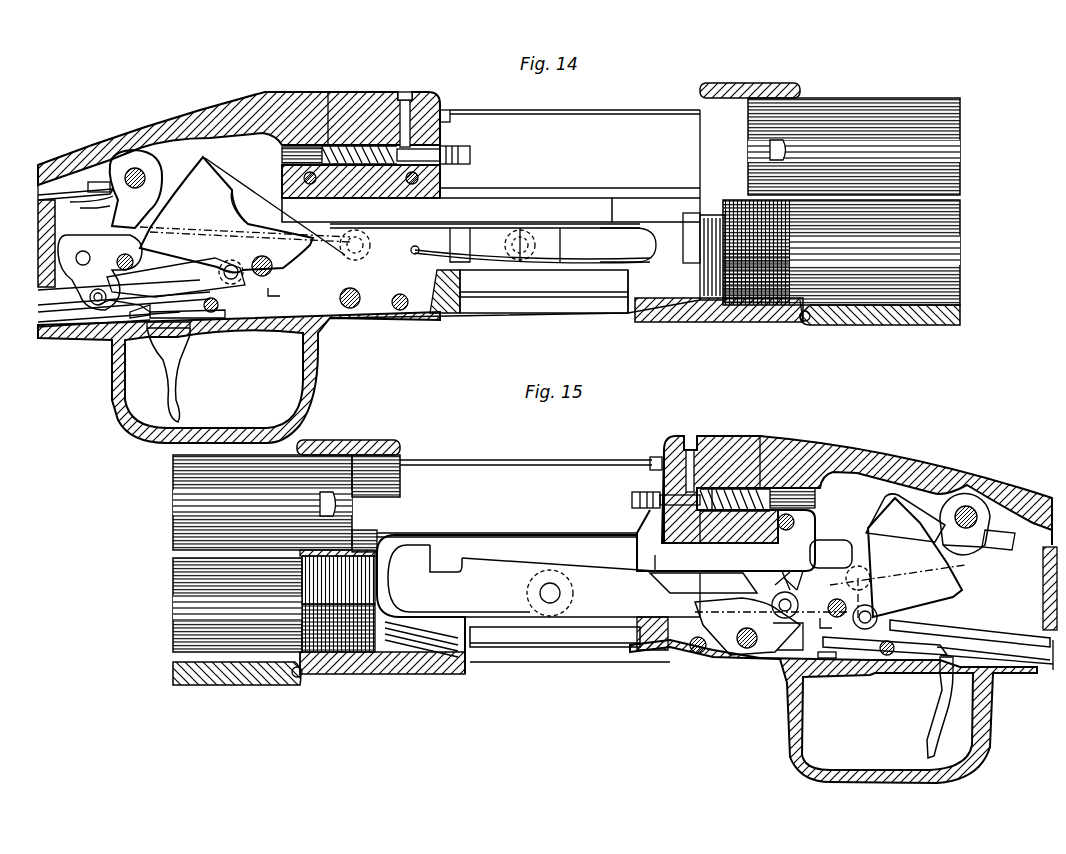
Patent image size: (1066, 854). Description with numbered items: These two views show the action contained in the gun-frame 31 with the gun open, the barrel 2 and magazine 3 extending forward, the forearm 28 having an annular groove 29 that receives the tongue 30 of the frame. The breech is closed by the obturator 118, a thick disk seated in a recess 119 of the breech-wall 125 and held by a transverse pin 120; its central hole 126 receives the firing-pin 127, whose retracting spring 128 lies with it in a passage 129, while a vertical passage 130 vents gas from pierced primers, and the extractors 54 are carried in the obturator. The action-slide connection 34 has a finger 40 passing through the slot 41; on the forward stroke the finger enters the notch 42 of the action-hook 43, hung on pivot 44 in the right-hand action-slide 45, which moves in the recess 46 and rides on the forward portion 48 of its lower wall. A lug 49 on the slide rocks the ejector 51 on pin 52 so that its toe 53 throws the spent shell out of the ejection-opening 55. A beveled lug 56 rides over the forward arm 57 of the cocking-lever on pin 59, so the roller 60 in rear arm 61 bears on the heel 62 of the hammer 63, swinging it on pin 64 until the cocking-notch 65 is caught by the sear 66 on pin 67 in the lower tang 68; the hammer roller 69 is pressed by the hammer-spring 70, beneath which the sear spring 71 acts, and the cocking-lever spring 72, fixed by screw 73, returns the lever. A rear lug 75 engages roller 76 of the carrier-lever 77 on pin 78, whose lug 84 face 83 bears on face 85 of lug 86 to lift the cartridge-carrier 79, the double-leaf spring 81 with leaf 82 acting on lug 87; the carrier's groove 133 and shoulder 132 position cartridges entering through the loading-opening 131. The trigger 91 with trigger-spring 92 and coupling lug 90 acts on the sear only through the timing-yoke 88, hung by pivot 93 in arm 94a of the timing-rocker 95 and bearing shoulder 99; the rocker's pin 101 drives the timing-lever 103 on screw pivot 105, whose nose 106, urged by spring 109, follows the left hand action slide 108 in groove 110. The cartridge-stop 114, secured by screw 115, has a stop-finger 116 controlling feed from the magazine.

In FIG. 14, the barrel 2 is at (832, 110).
In FIG. 15, the barrel 2 is at (286, 503).
In FIG. 14, the magazine 3 is at (841, 252).
In FIG. 15, the magazine 3 is at (190, 613).
In FIG. 14, the forearm 28 is at (848, 325).
In FIG. 15, the forearm 28 is at (237, 686).
In FIG. 14, the annular groove 29 is at (806, 322).
In FIG. 15, the annular groove 29 is at (295, 678).
In FIG. 14, the tongue 30 is at (800, 322).
In FIG. 15, the tongue 30 is at (303, 678).
In FIG. 14, the gun-frame 31 is at (752, 95).
In FIG. 15, the gun-frame 31 is at (358, 440).
In FIG. 15, the action-slide connection 34 is at (556, 560).
In FIG. 15, the finger 40 is at (450, 556).
In FIG. 15, the slot 41 is at (532, 545).
In FIG. 15, the notch 42 is at (430, 565).
In FIG. 15, the action-hook 43 is at (550, 600).
In FIG. 15, the pivot 44 is at (560, 589).
In FIG. 15, the right-hand action-slide 45 is at (655, 586).
In FIG. 15, the recess 46 is at (387, 548).
In FIG. 15, the forward portion of the lower wall of the recess 48 is at (445, 625).
In FIG. 15, the lug 49 is at (831, 554).
In FIG. 15, the ejector 51 is at (694, 633).
In FIG. 14, the pin 52 is at (300, 178).
In FIG. 15, the pin 52 is at (796, 521).
In FIG. 15, the toe 53 is at (648, 523).
In FIG. 14, the extractors 54 is at (470, 155).
In FIG. 15, the extractors 54 is at (632, 501).
In FIG. 14, the ejection-opening 55 is at (570, 137).
In FIG. 15, the ejection-opening 55 is at (526, 450).
In FIG. 15, the lug 56 is at (703, 583).
In FIG. 15, the forward arm 57 is at (696, 604).
In FIG. 14, the pin 59 is at (340, 299).
In FIG. 15, the pin 59 is at (746, 648).
In FIG. 15, the antifriction roller 60 is at (772, 605).
In FIG. 15, the rear arm 61 is at (716, 634).
In FIG. 14, the heel 62 is at (300, 240).
In FIG. 15, the heel 62 is at (795, 571).
In FIG. 14, the hammer 63 is at (226, 214).
In FIG. 15, the hammer 63 is at (915, 557).
In FIG. 14, the pin 64 is at (264, 256).
In FIG. 15, the pin 64 is at (833, 600).
In FIG. 14, the cocking-notch 65 is at (282, 292).
In FIG. 15, the cocking-notch 65 is at (821, 625).
In FIG. 14, the sear 66 is at (197, 304).
In FIG. 15, the sear 66 is at (908, 636).
In FIG. 14, the pin 67 is at (214, 312).
In FIG. 15, the pin 67 is at (885, 656).
In FIG. 14, the lower tang 68 is at (116, 386).
In FIG. 15, the lower tang 68 is at (792, 715).
In FIG. 14, the antifriction roller 69 is at (230, 262).
In FIG. 15, the antifriction roller 69 is at (880, 610).
In FIG. 14, the hammer-spring 70 is at (50, 310).
In FIG. 15, the hammer-spring 70 is at (972, 624).
In FIG. 14, the sear spring 71 is at (40, 325).
In FIG. 15, the sear spring 71 is at (992, 650).
In FIG. 15, the cocking-lever spring 72 is at (789, 636).
In FIG. 15, the screw 73 is at (828, 660).
In FIG. 15, the lug 75 is at (786, 580).
In FIG. 15, the antifriction roller 76 is at (897, 585).
In FIG. 15, the carrier-lever 77 is at (912, 528).
In FIG. 14, the pin 78 is at (135, 168).
In FIG. 15, the pin 78 is at (968, 510).
In FIG. 14, the cartridge-carrier 79 is at (244, 200).
In FIG. 14, the double-leaf spring 81 is at (38, 197).
In FIG. 14, the leaf 82 is at (85, 206).
In FIG. 15, the lower face 83 is at (964, 555).
In FIG. 15, the lug 84 is at (998, 540).
In FIG. 14, the face 85 is at (93, 210).
In FIG. 14, the lug 86 is at (136, 189).
In FIG. 14, the lug 87 is at (100, 178).
In FIG. 14, the timing-yoke 88 is at (150, 270).
In FIG. 14, the coupling lug 90 is at (172, 340).
In FIG. 15, the coupling lug 90 is at (948, 668).
In FIG. 14, the trigger 91 is at (170, 390).
In FIG. 15, the trigger 91 is at (933, 710).
In FIG. 14, the trigger-spring 92 is at (125, 316).
In FIG. 15, the trigger-spring 92 is at (1010, 664).
In FIG. 14, the pivot 93 is at (98, 305).
In FIG. 14, the arm 94a is at (40, 292).
In FIG. 14, the timing-rocker 95 is at (95, 258).
In FIG. 14, the shoulder 99 is at (110, 282).
In FIG. 14, the pin 101 is at (100, 263).
In FIG. 14, the timing-lever 103 is at (42, 250).
In FIG. 14, the screw pivot 105 is at (366, 240).
In FIG. 14, the nose 106 is at (632, 228).
In FIG. 14, the left hand action slide 108 is at (668, 190).
In FIG. 14, the spring 109 is at (588, 236).
In FIG. 14, the groove 110 is at (447, 210).
In FIG. 14, the cartridge-stop 114 is at (686, 257).
In FIG. 14, the screw 115 is at (525, 240).
In FIG. 14, the stop-finger 116 is at (690, 213).
In FIG. 14, the obturator 118 is at (440, 112).
In FIG. 15, the obturator 118 is at (664, 452).
In FIG. 14, the recess 119 is at (405, 100).
In FIG. 15, the recess 119 is at (690, 471).
In FIG. 14, the transverse pin 120 is at (440, 177).
In FIG. 15, the transverse pin 120 is at (680, 520).
In FIG. 14, the breech-wall 125 is at (372, 110).
In FIG. 15, the breech-wall 125 is at (738, 455).
In FIG. 14, the central hole 126 is at (448, 125).
In FIG. 15, the central hole 126 is at (662, 468).
In FIG. 14, the firing-pin 127 is at (282, 153).
In FIG. 15, the firing-pin 127 is at (815, 501).
In FIG. 14, the spring 128 is at (326, 110).
In FIG. 15, the spring 128 is at (740, 510).
In FIG. 14, the passage 129 is at (350, 198).
In FIG. 15, the passage 129 is at (780, 470).
In FIG. 14, the vertical passage 130 is at (412, 95).
In FIG. 15, the vertical passage 130 is at (692, 436).
In FIG. 14, the loading-opening 131 is at (515, 317).
In FIG. 15, the loading-opening 131 is at (570, 658).
In FIG. 14, the shoulder 132 is at (462, 272).
In FIG. 14, the groove 133 is at (589, 291).